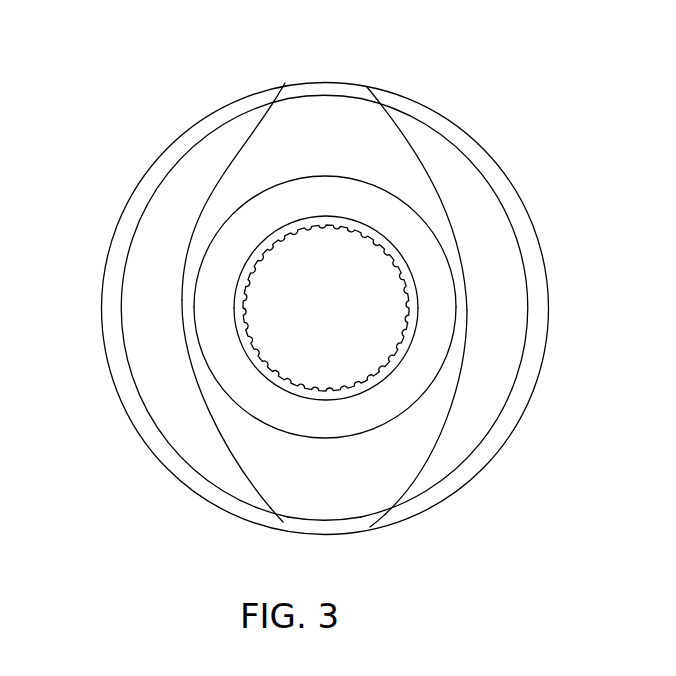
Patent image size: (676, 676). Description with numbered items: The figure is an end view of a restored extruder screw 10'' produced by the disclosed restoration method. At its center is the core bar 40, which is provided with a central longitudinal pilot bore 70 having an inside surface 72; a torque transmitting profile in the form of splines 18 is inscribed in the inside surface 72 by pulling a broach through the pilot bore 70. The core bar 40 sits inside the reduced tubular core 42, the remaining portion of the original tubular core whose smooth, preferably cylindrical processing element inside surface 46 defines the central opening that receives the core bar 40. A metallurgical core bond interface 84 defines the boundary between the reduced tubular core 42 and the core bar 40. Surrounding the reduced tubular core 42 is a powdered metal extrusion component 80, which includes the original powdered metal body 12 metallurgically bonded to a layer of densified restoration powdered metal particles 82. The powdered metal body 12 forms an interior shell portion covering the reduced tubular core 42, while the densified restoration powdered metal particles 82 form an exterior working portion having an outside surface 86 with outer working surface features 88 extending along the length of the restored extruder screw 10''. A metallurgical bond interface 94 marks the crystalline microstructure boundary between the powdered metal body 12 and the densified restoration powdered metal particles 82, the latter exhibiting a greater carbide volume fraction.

The restored extruder screw 10'' is at (73, 483).
The powdered metal body 12 is at (393, 148).
The splines 18 is at (388, 258).
The core bar 40 is at (289, 223).
The reduced tubular core 42 is at (240, 233).
The processing element inside surface 46 is at (290, 438).
The pilot bore 70 is at (346, 325).
The inside surface 72 is at (408, 297).
The powdered metal extrusion component 80 is at (534, 226).
The densified restoration powdered metal particles 82 is at (363, 96).
The metallurgical core bond interface 84 is at (413, 318).
The outside surface 86 is at (140, 291).
The outer working surface features 88 is at (331, 83).
The metallurgical bond interface 94 is at (297, 98).